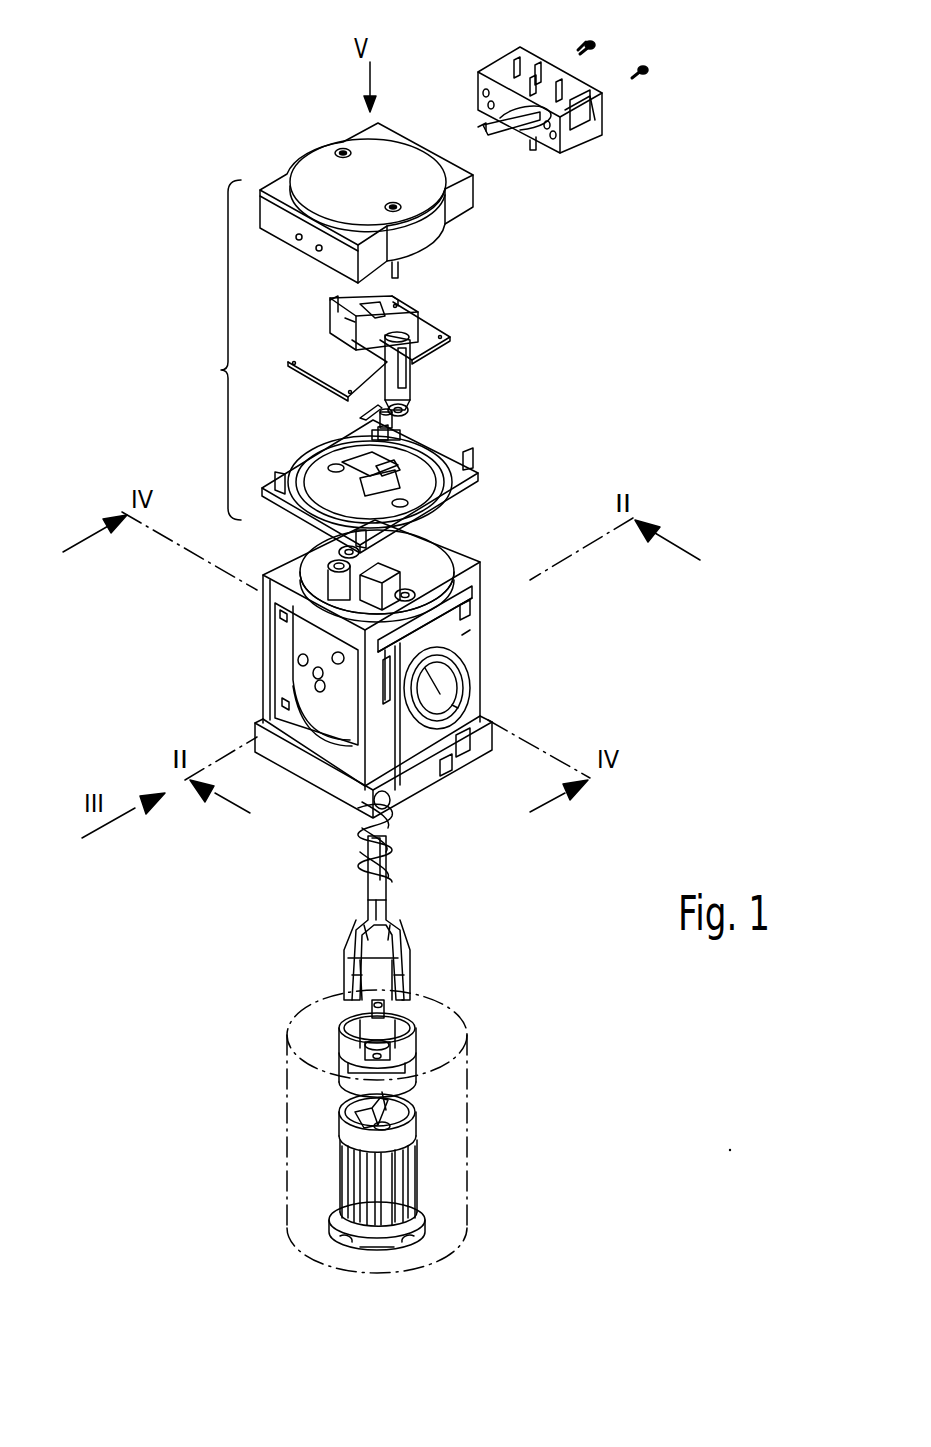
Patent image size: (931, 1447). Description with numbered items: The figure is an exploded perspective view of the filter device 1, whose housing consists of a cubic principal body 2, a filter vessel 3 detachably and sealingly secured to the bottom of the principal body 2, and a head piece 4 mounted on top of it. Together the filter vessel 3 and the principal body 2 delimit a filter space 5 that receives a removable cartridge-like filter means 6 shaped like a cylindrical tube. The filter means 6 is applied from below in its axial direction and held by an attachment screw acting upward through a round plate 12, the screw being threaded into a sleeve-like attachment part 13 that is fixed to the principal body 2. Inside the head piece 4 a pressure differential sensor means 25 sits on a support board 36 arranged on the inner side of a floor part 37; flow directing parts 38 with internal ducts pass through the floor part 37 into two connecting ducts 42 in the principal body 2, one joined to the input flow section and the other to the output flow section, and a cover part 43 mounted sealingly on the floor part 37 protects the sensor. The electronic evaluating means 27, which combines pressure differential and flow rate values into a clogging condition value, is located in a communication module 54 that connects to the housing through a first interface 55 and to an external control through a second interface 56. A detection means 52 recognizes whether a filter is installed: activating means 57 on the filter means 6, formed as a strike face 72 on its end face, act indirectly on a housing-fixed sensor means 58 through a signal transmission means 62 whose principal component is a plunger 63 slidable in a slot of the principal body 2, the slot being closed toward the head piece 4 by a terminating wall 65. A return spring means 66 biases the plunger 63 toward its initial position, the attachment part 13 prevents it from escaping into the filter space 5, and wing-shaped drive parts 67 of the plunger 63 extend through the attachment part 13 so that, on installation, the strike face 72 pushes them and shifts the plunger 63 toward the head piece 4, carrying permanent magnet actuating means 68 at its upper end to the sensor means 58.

The filter device 1 is at (540, 395).
The principal body 2 is at (270, 660).
The filter vessel 3 is at (468, 1082).
The head piece 4 is at (222, 350).
The filter space 5 is at (379, 1119).
The filter means 6 is at (400, 1175).
The round plate 12 is at (390, 1248).
The attachment part 13 is at (412, 1030).
The pressure differential sensor means 25 is at (410, 308).
The electronic evaluating means 27 is at (605, 128).
The support board 36 is at (430, 330).
The floor part 37 is at (478, 482).
The flow directing parts 38 is at (330, 322).
The connecting ducts 42 is at (318, 552).
The cover part 43 is at (470, 196).
The detection means 52 is at (410, 416).
The communication module 54 is at (500, 70).
The first interface 55 is at (472, 125).
The second interface 56 is at (590, 72).
The activating means 57 is at (345, 1115).
The sensor means 58 is at (358, 410).
The signal transmission means 62 is at (352, 893).
The plunger 63 is at (382, 913).
The terminating wall 65 is at (390, 570).
The return spring means 66 is at (396, 826).
The drive parts 67 is at (350, 975).
The actuating means 68 is at (386, 850).
The strike face 72 is at (384, 1101).